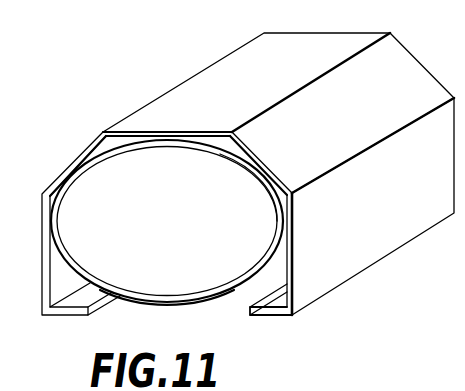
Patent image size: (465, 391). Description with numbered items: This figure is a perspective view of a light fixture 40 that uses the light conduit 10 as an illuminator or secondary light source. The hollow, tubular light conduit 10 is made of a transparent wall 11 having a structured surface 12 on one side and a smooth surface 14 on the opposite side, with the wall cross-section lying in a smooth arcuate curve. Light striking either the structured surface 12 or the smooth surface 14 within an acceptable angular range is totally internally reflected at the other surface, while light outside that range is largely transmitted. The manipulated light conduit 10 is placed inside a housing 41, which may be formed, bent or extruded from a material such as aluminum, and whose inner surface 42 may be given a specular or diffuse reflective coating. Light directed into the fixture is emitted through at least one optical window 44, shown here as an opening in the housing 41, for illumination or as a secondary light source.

The light conduit 10 is at (139, 312).
The wall 11 is at (176, 304).
The structured surface 12 is at (217, 297).
The smooth surface 14 is at (243, 167).
The light fixture 40 is at (248, 184).
The housing 41 is at (221, 61).
The inner surface 42 is at (284, 270).
The optical window 44 is at (250, 311).